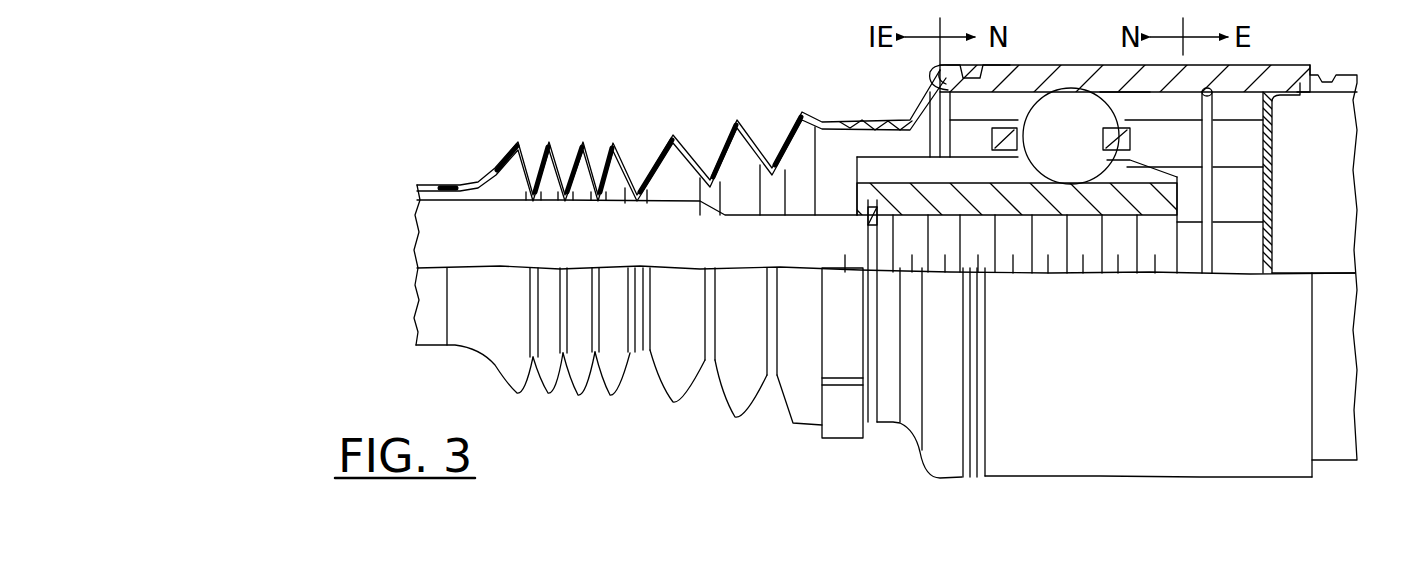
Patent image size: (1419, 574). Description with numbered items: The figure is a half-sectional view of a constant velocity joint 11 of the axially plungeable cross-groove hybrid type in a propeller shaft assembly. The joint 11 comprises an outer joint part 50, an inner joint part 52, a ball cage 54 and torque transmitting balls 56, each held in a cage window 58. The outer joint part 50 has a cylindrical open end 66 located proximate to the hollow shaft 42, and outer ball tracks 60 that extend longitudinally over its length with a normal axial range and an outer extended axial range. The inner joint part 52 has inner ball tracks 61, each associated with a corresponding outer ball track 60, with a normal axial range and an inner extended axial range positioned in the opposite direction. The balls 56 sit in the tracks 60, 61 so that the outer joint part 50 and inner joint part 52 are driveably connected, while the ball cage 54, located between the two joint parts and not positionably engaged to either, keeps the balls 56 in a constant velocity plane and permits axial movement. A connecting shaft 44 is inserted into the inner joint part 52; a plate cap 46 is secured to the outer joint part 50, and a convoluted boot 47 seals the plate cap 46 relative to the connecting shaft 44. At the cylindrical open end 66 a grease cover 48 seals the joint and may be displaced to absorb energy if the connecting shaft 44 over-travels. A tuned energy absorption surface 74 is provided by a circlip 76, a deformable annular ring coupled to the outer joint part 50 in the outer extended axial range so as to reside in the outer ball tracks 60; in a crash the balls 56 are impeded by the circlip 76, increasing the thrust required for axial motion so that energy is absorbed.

The constant velocity joint 11 is at (684, 440).
The hollow shaft 42 is at (1343, 77).
The connecting shaft 44 is at (457, 222).
The plate cap 46 is at (910, 108).
The convoluted boot 47 is at (660, 175).
The grease cover 48 is at (1268, 227).
The outer joint part 50 is at (1017, 65).
The inner joint part 52 is at (1075, 212).
The ball cage 54 is at (1118, 135).
The torque transmitting ball 56 is at (1080, 147).
The cage window 58 is at (1124, 84).
The outer ball track 60 is at (1165, 108).
The inner ball track 61 is at (903, 167).
The cylindrical open end 66 is at (1257, 100).
The tuned energy absorption surface 74 is at (1232, 138).
The circlip 76 is at (1208, 190).